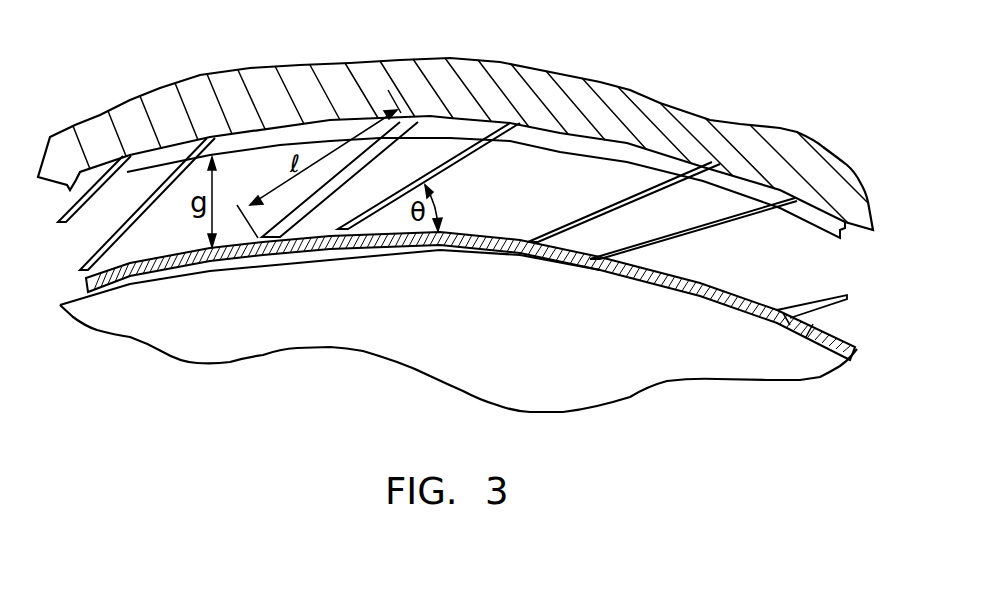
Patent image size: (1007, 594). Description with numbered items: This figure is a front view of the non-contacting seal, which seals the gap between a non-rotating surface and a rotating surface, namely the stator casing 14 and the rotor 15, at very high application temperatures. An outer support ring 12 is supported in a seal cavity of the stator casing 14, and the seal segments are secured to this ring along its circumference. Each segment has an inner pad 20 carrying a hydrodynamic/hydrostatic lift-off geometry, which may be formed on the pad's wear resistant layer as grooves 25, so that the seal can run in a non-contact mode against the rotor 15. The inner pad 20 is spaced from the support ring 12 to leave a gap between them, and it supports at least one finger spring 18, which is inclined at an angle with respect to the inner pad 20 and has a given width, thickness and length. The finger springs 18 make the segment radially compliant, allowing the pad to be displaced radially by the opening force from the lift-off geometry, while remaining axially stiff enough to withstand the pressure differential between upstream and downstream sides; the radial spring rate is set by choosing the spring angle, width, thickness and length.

The outer support ring 12 is at (282, 148).
The stator casing 14 is at (537, 72).
The rotor 15 is at (553, 348).
The finger spring 18 is at (612, 205).
The inner pad 20 is at (463, 232).
The grooves 25 is at (423, 252).